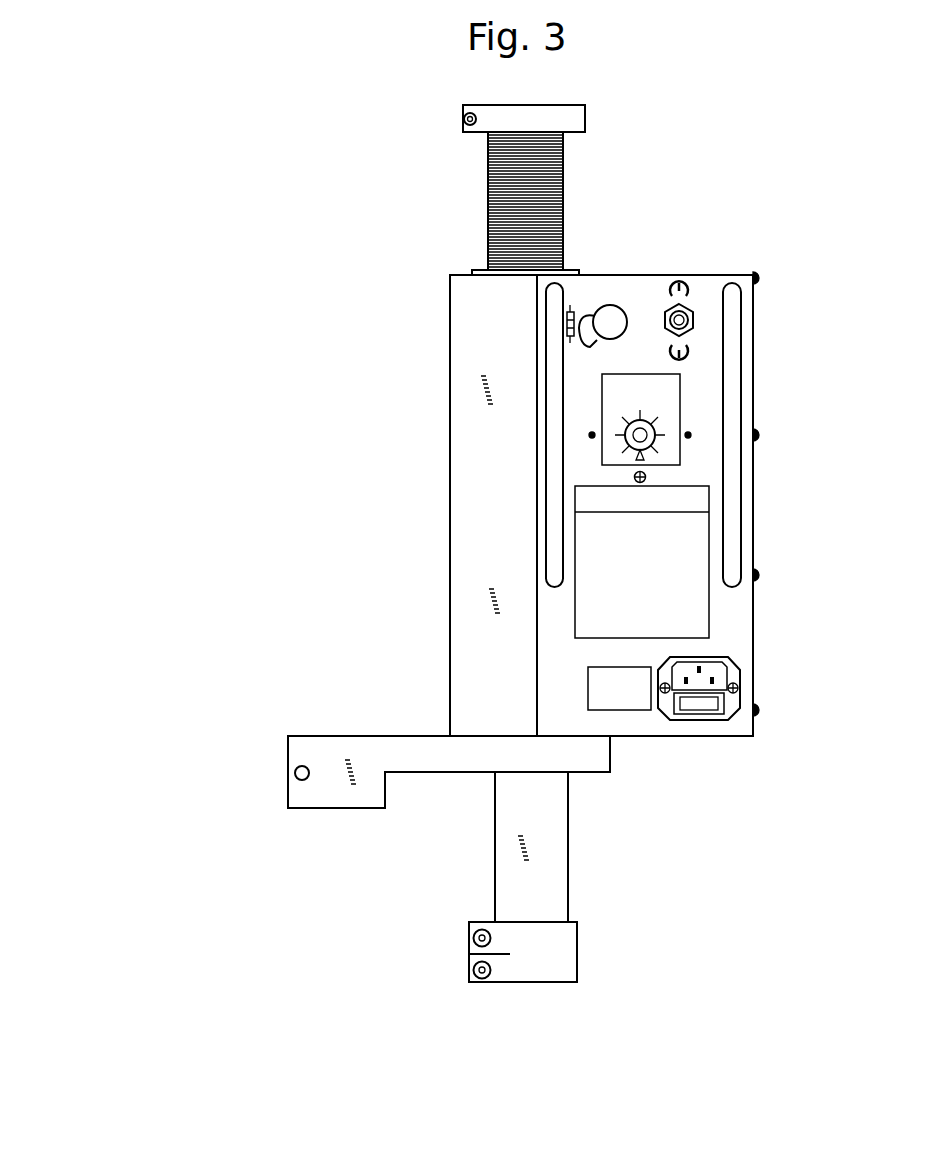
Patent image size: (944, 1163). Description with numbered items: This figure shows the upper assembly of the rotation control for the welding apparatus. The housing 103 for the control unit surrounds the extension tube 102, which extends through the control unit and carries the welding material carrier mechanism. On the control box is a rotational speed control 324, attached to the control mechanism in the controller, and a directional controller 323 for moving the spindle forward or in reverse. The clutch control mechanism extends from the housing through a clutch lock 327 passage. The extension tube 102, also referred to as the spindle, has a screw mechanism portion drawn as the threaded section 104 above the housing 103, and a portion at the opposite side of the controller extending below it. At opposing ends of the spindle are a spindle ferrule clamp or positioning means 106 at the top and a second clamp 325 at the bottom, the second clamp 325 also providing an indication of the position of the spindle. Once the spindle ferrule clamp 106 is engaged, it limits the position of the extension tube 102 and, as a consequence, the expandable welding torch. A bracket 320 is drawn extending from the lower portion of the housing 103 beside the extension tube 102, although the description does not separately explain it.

The extension tube 102 is at (570, 814).
The housing 103 is at (449, 440).
The threaded shaft 104 is at (478, 222).
The spindle ferrule clamp 106 is at (590, 124).
The mounting bracket 320 is at (300, 756).
The directional controller 323 is at (696, 293).
The rotational speed control 324 is at (676, 405).
The second clamp 325 is at (577, 967).
The clutch lock 327 is at (578, 344).